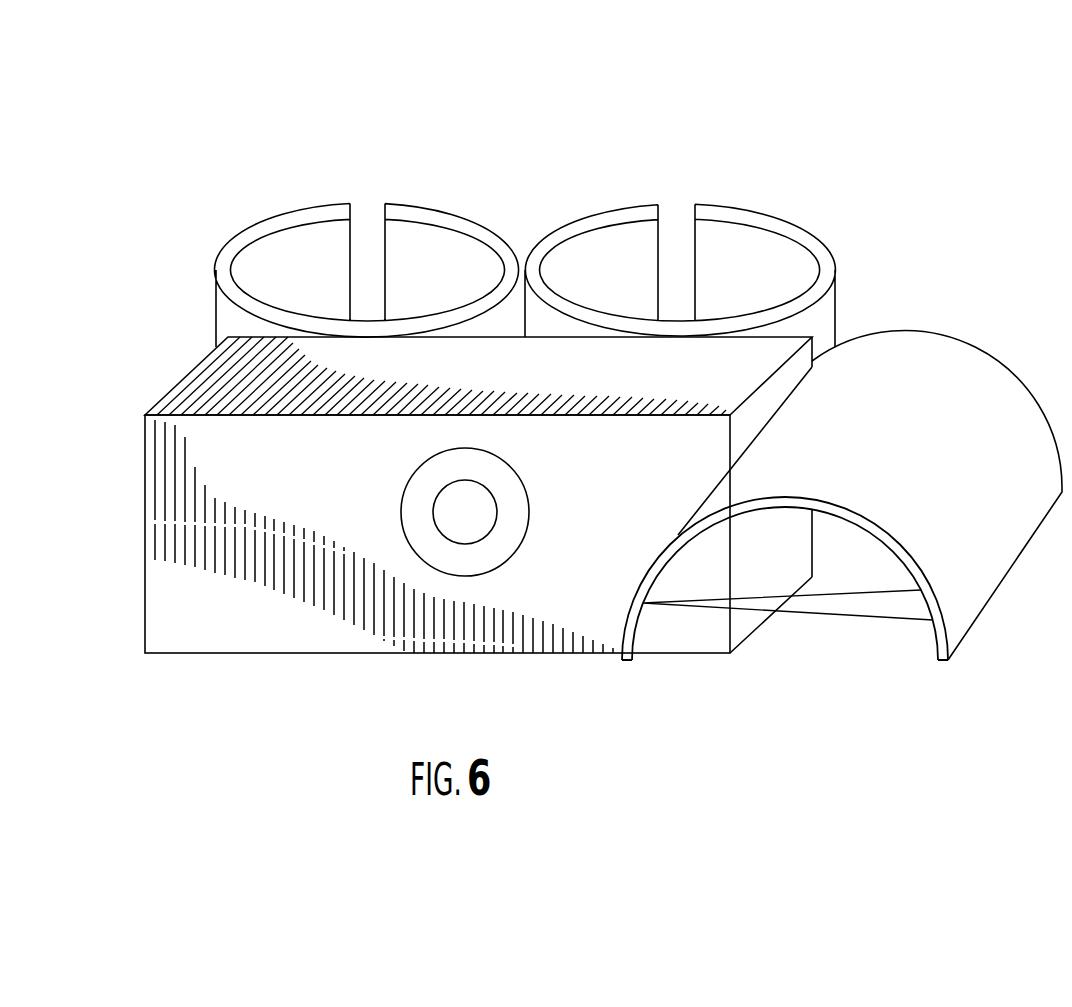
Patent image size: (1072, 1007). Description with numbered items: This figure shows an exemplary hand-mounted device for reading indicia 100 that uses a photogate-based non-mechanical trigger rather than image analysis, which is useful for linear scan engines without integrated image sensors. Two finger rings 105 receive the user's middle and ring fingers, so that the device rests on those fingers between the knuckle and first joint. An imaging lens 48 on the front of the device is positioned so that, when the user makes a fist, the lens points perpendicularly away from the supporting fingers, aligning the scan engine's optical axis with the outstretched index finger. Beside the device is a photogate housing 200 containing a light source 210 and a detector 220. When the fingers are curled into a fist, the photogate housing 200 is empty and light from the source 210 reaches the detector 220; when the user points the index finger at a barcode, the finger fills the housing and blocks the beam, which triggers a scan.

The hand-mounted device for reading indicia 100 is at (252, 380).
The finger rings 105 is at (657, 254).
The imaging lens 48 is at (412, 567).
The photogate housing 200 is at (842, 505).
The photogate light source 210 is at (645, 622).
The photogate detector 220 is at (944, 618).